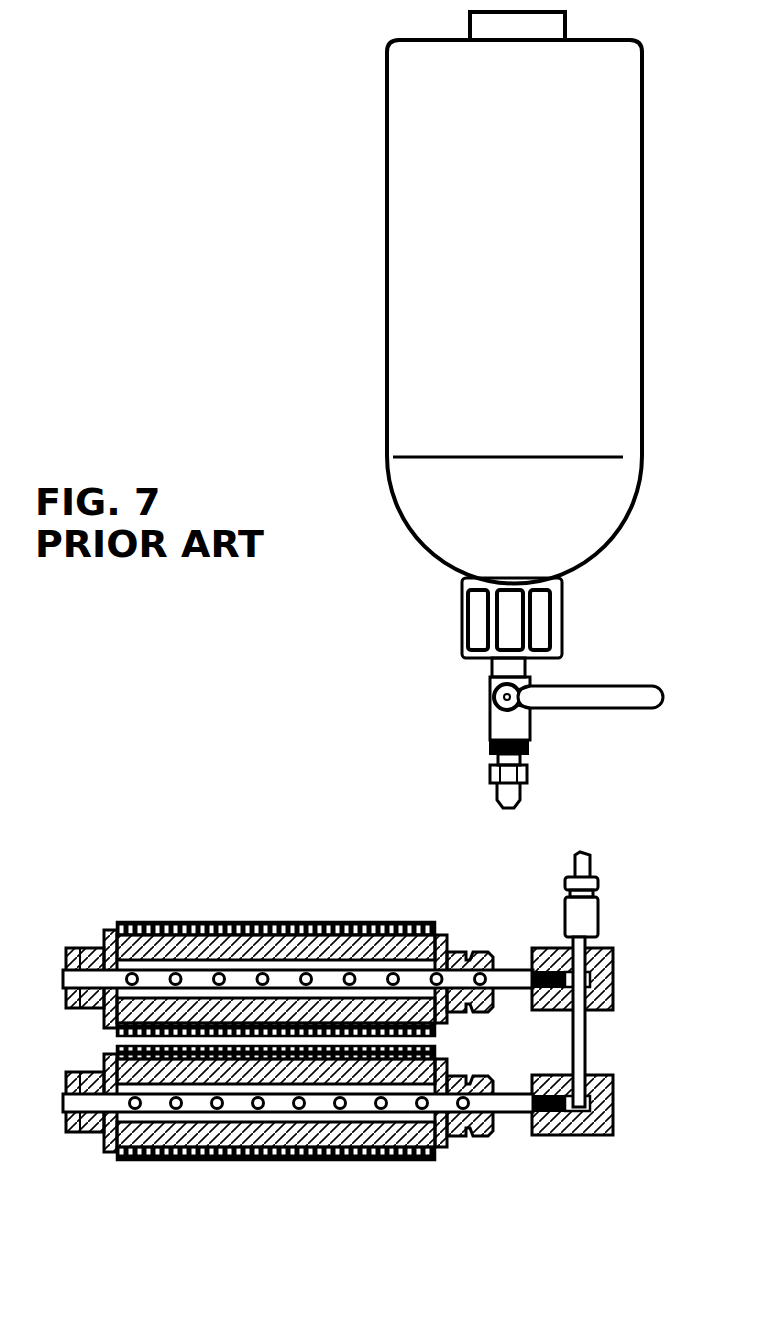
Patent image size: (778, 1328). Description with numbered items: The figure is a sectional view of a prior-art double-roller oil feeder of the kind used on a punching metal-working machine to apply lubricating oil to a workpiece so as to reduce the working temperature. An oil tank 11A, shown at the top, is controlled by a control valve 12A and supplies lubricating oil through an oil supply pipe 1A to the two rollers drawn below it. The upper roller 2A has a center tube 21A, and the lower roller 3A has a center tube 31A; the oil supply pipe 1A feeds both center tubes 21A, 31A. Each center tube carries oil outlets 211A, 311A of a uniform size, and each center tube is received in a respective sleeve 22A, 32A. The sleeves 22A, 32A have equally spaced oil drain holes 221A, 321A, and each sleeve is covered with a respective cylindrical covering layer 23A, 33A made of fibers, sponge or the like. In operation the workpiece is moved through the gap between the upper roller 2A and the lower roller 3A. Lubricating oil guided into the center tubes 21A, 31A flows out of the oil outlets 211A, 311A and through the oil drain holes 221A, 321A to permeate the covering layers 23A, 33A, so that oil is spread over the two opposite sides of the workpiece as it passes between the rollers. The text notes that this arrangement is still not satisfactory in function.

The oil tank 11A is at (603, 525).
The control valve 12A is at (588, 686).
The oil supply pipe 1A is at (516, 797).
The upper roller 2A is at (304, 920).
The center tube 21A is at (512, 970).
The oil outlets 211A is at (461, 950).
The sleeve 22A is at (275, 935).
The oil drain holes 221A is at (355, 925).
The cylindrical covering layer 23A is at (250, 923).
The lower roller 3A is at (338, 1104).
The center tube 31A is at (508, 1105).
The oil outlets 311A is at (447, 1163).
The sleeve 32A is at (275, 1157).
The oil drain holes 321A is at (343, 1163).
The cylindrical covering layer 33A is at (233, 1163).